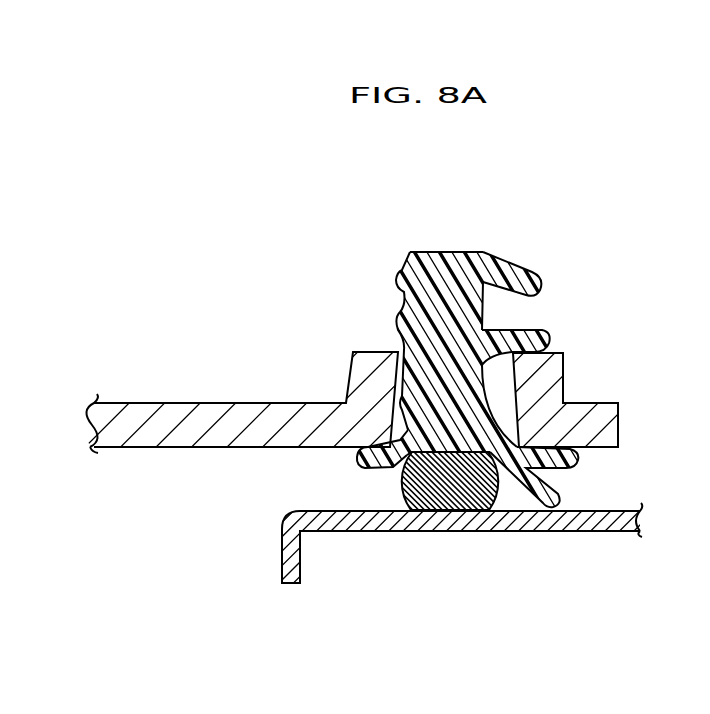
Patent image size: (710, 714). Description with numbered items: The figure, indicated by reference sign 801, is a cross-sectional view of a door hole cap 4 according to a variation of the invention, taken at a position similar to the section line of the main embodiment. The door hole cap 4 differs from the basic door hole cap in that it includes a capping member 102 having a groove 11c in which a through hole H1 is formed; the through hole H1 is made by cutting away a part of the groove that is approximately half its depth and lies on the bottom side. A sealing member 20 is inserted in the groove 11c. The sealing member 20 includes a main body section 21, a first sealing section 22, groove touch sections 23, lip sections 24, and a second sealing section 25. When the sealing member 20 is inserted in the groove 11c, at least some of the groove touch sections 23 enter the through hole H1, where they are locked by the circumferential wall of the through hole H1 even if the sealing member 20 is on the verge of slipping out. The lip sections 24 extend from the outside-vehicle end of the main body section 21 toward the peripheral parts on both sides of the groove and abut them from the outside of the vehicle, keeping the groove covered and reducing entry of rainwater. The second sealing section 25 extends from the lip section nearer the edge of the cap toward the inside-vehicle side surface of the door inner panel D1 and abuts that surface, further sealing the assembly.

The cross-sectional view 801 is at (156, 175).
The door hole cap 4 is at (265, 284).
The through hole H1 is at (578, 318).
The capping member 102 is at (162, 420).
The groove 11c is at (540, 392).
The door inner panel D1 is at (370, 520).
The first sealing section 22 is at (460, 512).
The sealing member 20 is at (463, 381).
The main body section 21 is at (445, 262).
The groove touch sections 23 is at (540, 270).
The lip sections 24 is at (362, 456).
The second sealing section 25 is at (568, 504).